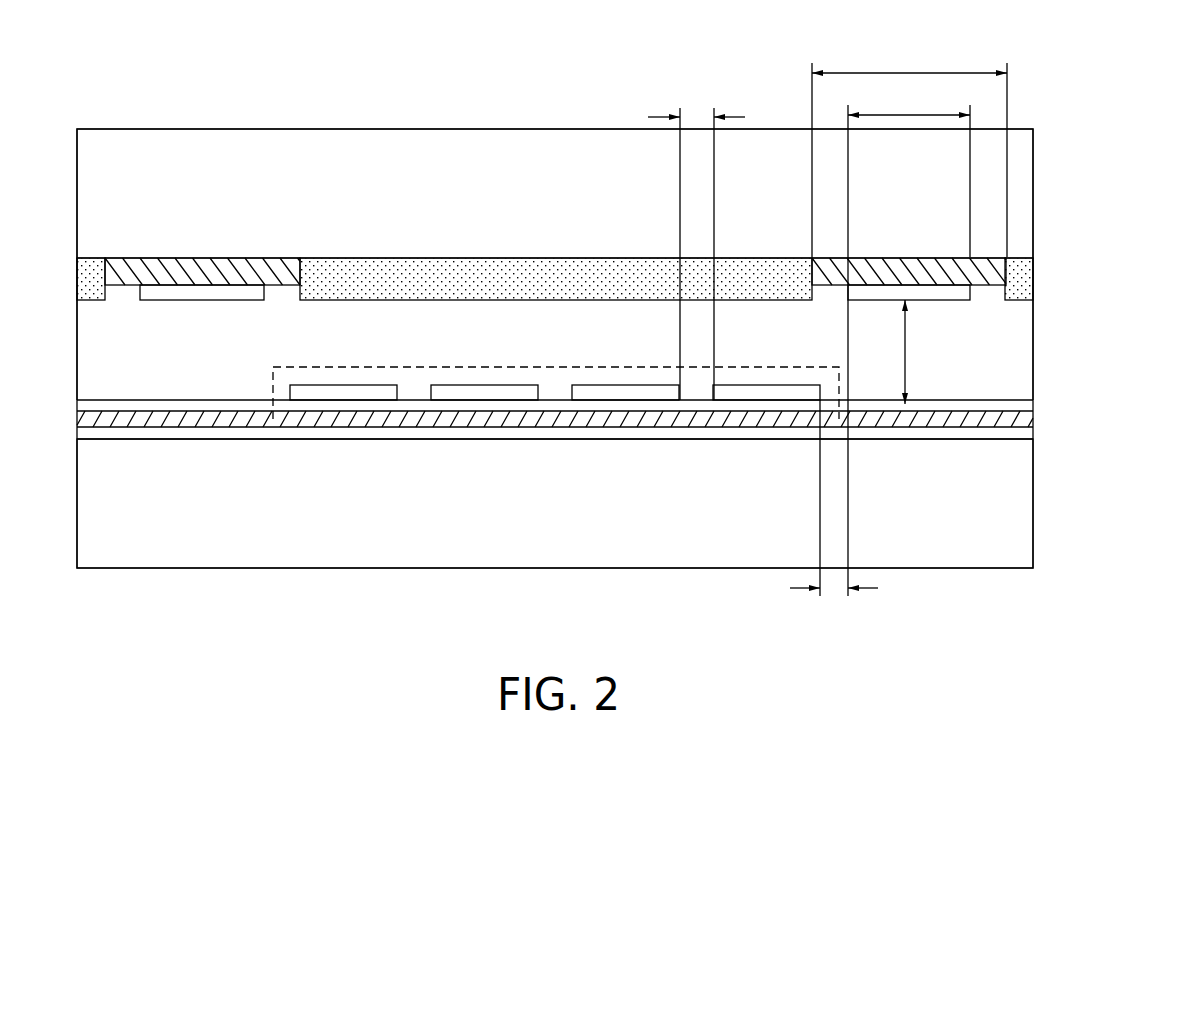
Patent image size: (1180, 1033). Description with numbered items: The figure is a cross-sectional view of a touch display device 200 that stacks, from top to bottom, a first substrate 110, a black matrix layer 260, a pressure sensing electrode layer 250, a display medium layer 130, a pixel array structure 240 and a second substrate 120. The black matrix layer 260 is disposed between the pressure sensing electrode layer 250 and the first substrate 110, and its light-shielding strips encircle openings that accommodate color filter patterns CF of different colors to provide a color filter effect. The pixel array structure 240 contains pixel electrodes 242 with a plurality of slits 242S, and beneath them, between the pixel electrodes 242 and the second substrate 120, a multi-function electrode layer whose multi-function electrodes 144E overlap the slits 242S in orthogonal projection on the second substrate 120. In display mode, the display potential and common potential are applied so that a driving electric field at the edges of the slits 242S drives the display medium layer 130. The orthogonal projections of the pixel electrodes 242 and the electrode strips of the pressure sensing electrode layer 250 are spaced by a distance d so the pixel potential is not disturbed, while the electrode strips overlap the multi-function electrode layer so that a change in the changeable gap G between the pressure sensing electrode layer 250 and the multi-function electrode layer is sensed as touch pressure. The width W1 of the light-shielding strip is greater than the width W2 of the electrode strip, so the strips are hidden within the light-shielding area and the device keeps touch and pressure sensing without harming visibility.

The touch display device 200 is at (1108, 631).
The first substrate 110 is at (1027, 198).
The second substrate 120 is at (1027, 503).
The display medium layer 130 is at (1027, 348).
The black matrix layer 260 is at (1005, 272).
The pressure sensing electrode layer 250 is at (962, 293).
The color filter patterns CF is at (539, 282).
The pixel array structure 240 is at (614, 495).
The pixel electrodes 242 is at (738, 412).
The slits 242S is at (696, 238).
The multi-function electrodes 144E is at (998, 425).
The width of the light-shielding strip W1 is at (909, 148).
The width of the electrode strip W2 is at (909, 338).
The distance d is at (834, 511).
The changeable gap G is at (915, 352).